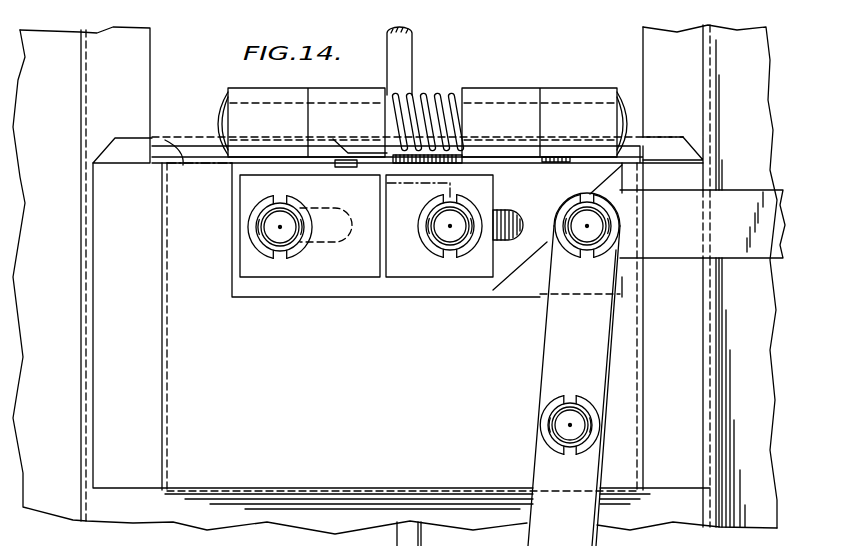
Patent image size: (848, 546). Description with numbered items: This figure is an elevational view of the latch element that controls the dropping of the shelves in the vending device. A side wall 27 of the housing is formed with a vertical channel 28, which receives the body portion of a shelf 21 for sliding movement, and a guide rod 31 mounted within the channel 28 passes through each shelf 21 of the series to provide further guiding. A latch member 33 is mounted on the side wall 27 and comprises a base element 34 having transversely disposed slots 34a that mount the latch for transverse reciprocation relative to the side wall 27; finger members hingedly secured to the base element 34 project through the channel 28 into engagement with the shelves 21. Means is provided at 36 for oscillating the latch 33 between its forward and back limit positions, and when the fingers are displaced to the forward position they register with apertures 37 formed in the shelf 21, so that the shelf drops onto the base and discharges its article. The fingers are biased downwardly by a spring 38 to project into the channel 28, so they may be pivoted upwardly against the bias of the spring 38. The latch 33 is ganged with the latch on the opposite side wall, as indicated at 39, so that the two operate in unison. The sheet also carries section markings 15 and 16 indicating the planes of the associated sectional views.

The side wall 27 is at (43, 32).
The vertical channel 28 is at (83, 65).
The shelf 21 is at (161, 140).
The aperture 37 is at (183, 165).
The guide rod 31 is at (411, 50).
The spring 38 is at (433, 98).
The latch member 33 is at (292, 288).
The base element 34 is at (238, 250).
The transversely disposed slot 34a is at (350, 200).
The means for oscillating the latch 36 is at (550, 383).
The ganging means 39 is at (740, 198).
The section line 15 is at (386, 68).
The section line 16 is at (636, 70).